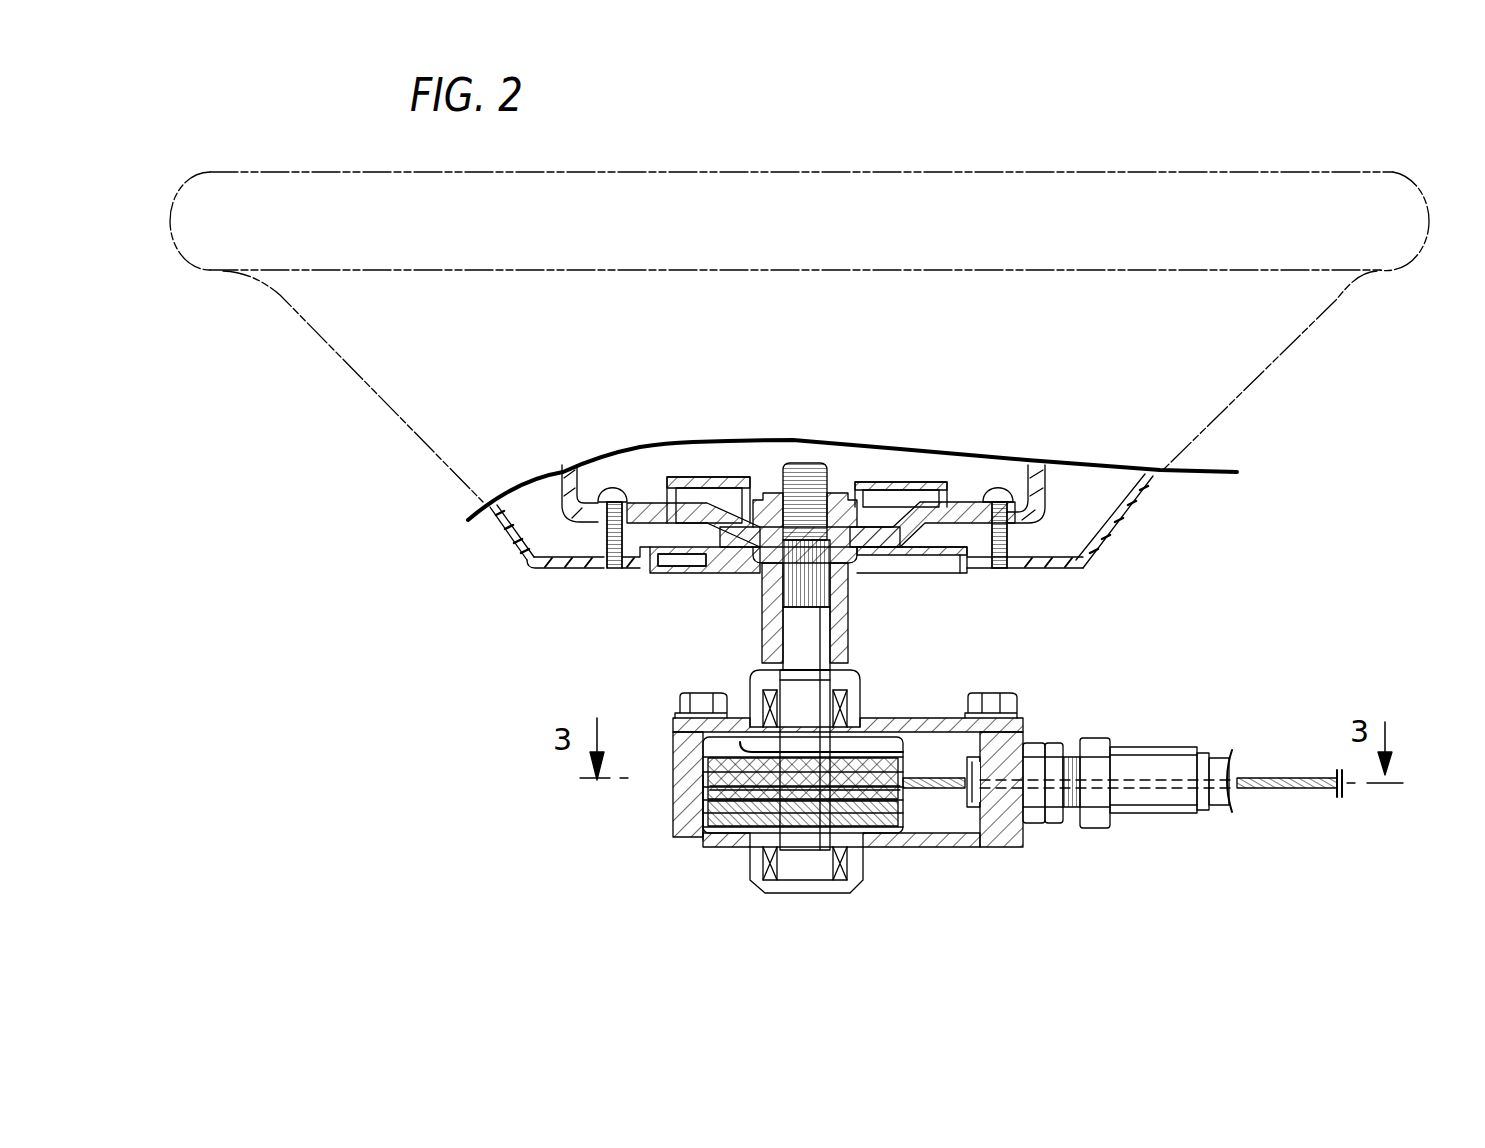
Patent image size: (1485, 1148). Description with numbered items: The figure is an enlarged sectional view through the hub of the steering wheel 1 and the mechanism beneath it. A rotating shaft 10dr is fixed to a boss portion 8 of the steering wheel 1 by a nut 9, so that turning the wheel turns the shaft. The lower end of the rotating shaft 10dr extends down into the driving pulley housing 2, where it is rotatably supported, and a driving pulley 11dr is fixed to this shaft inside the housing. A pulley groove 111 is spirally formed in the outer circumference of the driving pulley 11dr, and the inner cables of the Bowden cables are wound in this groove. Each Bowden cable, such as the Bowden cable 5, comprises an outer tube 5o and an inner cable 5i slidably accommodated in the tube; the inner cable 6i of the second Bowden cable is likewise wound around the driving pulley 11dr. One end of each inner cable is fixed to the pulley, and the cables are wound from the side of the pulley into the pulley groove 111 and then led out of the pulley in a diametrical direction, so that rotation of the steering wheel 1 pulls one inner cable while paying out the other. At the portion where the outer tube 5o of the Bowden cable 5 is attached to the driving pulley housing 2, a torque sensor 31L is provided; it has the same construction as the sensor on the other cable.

The steering wheel 1 is at (395, 418).
The nut 9 is at (840, 500).
The boss portion 8 is at (770, 621).
The rotating shaft 10dr is at (823, 635).
The driving pulley housing 2 is at (905, 855).
The inner cable 6i is at (707, 765).
The pulley groove 111 is at (707, 791).
The inner cable 5i is at (703, 845).
The outer tube 5o is at (1220, 772).
The Bowden cable 5 is at (1308, 704).
The torque sensor 31L is at (1146, 740).
The driving pulley 11dr is at (733, 838).